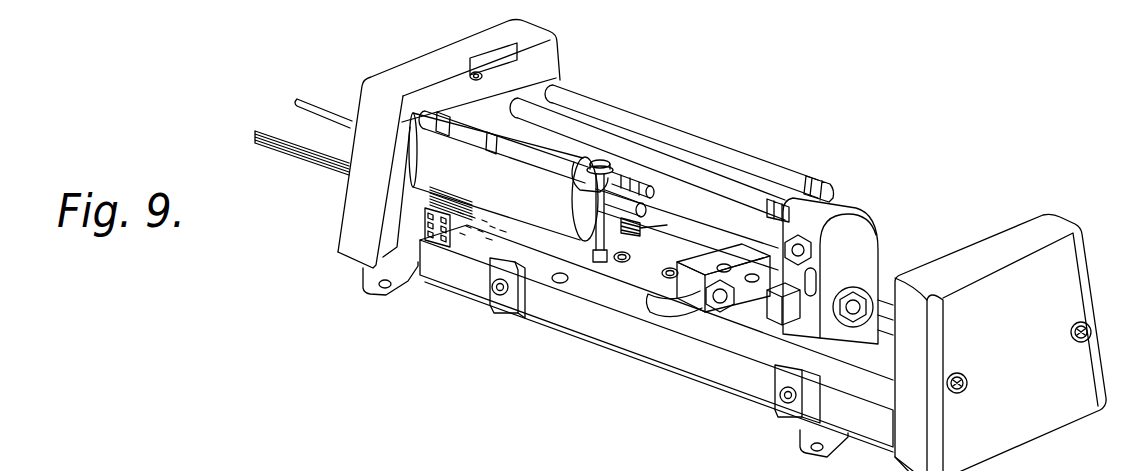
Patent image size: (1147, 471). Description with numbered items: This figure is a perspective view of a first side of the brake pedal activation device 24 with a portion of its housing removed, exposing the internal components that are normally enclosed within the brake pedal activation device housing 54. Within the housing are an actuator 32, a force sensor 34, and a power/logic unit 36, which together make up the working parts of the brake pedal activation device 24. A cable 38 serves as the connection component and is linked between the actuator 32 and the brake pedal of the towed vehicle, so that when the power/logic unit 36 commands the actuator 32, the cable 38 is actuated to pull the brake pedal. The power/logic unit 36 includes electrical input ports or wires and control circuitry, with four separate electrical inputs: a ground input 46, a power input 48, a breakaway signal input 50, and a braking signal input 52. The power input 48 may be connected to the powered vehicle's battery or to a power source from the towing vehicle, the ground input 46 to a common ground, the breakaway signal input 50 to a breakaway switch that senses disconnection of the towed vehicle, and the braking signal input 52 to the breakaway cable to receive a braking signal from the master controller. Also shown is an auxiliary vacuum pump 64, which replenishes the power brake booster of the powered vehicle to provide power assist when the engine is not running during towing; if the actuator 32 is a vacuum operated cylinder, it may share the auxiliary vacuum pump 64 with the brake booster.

The brake pedal activation device 24 is at (828, 82).
The actuator 32 is at (707, 167).
The force sensor 34 is at (747, 310).
The power/logic unit 36 is at (483, 252).
The cable 38 is at (308, 98).
The ground input 46 is at (219, 138).
The power input 48 is at (219, 138).
The breakaway signal input 50 is at (219, 138).
The braking signal input 52 is at (265, 136).
The brake pedal activation device housing 54 is at (1030, 233).
The auxiliary vacuum pump 64 is at (432, 160).